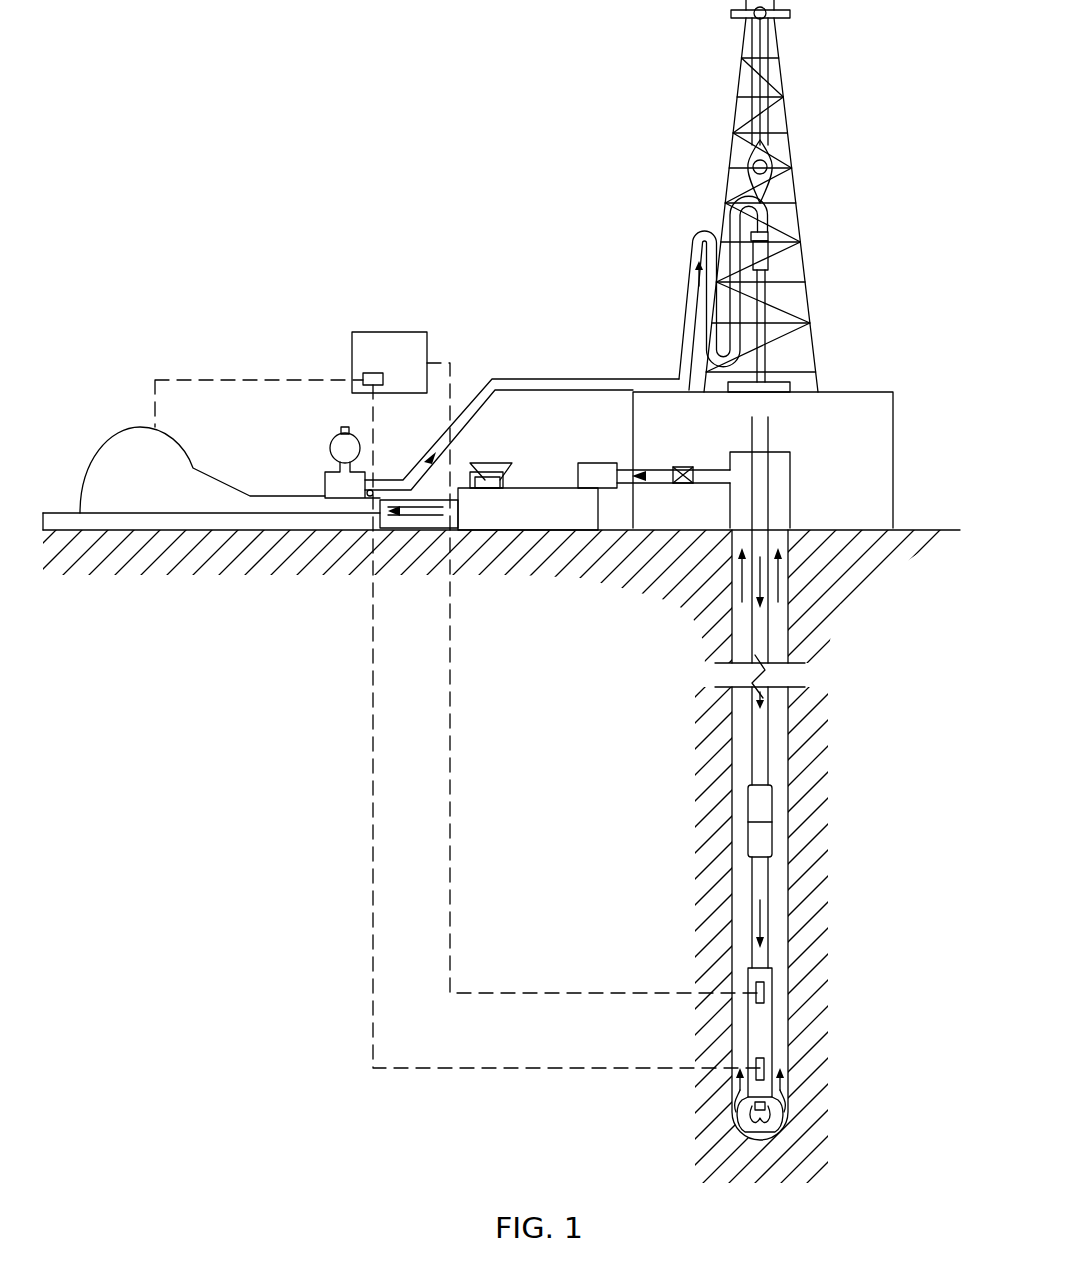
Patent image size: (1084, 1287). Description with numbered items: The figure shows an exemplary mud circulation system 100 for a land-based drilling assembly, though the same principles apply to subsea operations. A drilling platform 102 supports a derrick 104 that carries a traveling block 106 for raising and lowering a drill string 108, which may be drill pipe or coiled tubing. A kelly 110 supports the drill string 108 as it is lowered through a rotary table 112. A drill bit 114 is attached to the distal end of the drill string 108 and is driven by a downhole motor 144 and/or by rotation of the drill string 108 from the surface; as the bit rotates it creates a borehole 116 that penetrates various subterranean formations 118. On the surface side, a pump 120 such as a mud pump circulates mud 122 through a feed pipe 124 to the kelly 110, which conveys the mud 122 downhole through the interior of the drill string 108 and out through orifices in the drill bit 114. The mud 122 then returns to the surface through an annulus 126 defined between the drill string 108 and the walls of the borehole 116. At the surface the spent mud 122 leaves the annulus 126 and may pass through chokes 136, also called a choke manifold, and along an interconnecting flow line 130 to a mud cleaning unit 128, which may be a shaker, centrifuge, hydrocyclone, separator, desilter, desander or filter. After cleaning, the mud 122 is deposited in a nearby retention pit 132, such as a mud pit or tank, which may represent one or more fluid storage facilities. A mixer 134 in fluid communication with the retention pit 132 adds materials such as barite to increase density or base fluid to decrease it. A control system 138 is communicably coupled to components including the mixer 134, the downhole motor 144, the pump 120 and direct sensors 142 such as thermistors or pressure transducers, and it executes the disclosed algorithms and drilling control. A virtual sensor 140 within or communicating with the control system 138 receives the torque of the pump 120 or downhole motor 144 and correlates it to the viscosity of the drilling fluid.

The mud circulation system 100 is at (453, 86).
The drilling platform 102 is at (894, 400).
The derrick 104 is at (790, 112).
The traveling block 106 is at (770, 157).
The drill string 108 is at (790, 655).
The kelly 110 is at (760, 290).
The rotary table 112 is at (790, 388).
The drill bit 114 is at (782, 1105).
The borehole 116 is at (790, 745).
The subterranean formations 118 is at (609, 783).
The pump 120 is at (147, 491).
The mud 122 is at (392, 486).
The feed pipe 124 is at (522, 379).
The annulus 126 is at (777, 918).
The mud cleaning unit 128 is at (592, 463).
The flow line 130 is at (717, 483).
The retention pit 132 is at (542, 519).
The mixer 134 is at (477, 488).
The chokes 136 is at (680, 483).
The control system 138 is at (407, 362).
The virtual sensor 140 is at (366, 385).
The direct sensors 142 is at (763, 990).
The downhole motor 144 is at (763, 1068).